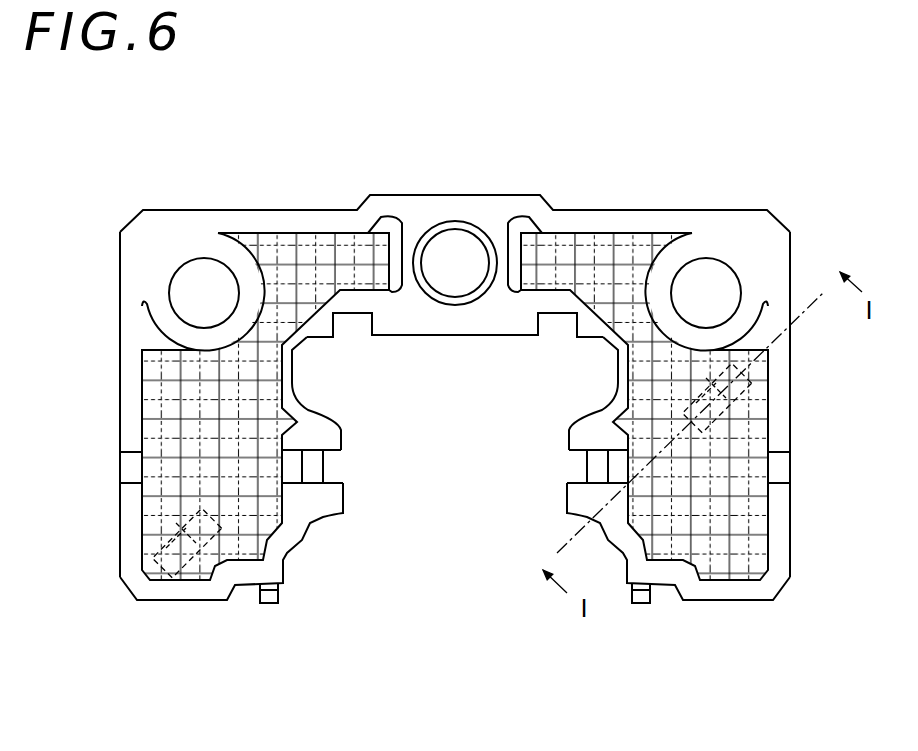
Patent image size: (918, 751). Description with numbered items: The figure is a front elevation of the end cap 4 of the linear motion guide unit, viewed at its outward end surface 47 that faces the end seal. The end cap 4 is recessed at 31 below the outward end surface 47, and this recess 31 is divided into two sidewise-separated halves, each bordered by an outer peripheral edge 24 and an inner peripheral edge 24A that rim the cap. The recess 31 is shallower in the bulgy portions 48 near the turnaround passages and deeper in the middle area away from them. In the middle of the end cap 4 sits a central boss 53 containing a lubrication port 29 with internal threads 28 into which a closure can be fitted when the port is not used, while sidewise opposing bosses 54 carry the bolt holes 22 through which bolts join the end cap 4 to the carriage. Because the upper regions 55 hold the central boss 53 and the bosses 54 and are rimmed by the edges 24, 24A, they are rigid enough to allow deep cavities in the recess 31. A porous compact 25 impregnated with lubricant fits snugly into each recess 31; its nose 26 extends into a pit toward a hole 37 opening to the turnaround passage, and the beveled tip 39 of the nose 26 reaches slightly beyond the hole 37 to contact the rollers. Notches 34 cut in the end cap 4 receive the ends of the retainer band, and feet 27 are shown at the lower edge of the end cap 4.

The end cap 4 is at (687, 208).
The bolt holes 22 is at (192, 278).
The outer peripheral edge 24 is at (135, 512).
The inner peripheral edge 24A is at (292, 402).
The porous compact 25 is at (302, 262).
The nose 26 is at (152, 562).
The foot 27 is at (271, 604).
The internal threads 28 is at (483, 233).
The lubrication port 29 is at (448, 257).
The recess 31 is at (140, 384).
The notches 34 is at (128, 470).
The holes 37 is at (190, 552).
The beveled tips 39 is at (205, 527).
The outward end surface 47 is at (155, 340).
The bulgy portions 48 is at (170, 430).
The central boss 53 is at (402, 258).
The bosses 54 is at (244, 270).
The upper regions 55 is at (348, 257).